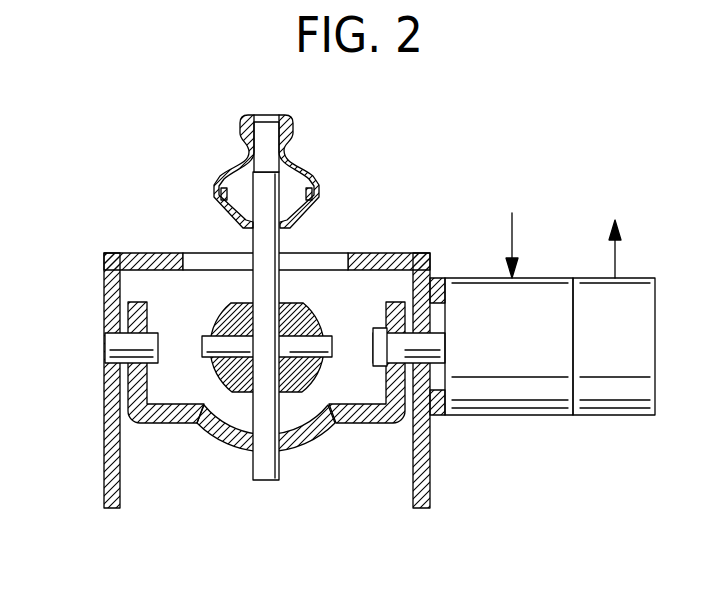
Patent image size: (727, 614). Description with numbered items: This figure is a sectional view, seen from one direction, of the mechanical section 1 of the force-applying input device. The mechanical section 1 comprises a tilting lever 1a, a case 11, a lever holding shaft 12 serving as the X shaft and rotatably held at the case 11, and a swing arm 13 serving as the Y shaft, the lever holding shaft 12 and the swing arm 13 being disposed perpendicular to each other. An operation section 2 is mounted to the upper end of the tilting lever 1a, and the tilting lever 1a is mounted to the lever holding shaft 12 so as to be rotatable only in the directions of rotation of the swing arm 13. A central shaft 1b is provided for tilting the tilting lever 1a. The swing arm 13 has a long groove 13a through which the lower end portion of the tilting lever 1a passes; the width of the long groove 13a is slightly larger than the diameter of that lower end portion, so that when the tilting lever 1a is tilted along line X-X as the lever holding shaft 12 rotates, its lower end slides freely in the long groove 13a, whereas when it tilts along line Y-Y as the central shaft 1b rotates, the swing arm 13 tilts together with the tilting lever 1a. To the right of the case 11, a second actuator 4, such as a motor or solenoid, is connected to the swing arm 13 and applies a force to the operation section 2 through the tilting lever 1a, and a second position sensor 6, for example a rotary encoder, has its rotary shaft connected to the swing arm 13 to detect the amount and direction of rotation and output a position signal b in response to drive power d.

The mechanical section 1 is at (341, 323).
The tilting lever 1a is at (270, 470).
The central shaft 1b is at (227, 352).
The operation section 2 is at (290, 124).
The second actuator 4 is at (513, 393).
The second position sensor 6 is at (607, 393).
The case 11 is at (105, 291).
The lever holding shaft 12 is at (306, 301).
The swing arm 13 is at (157, 417).
The long groove 13a is at (313, 447).